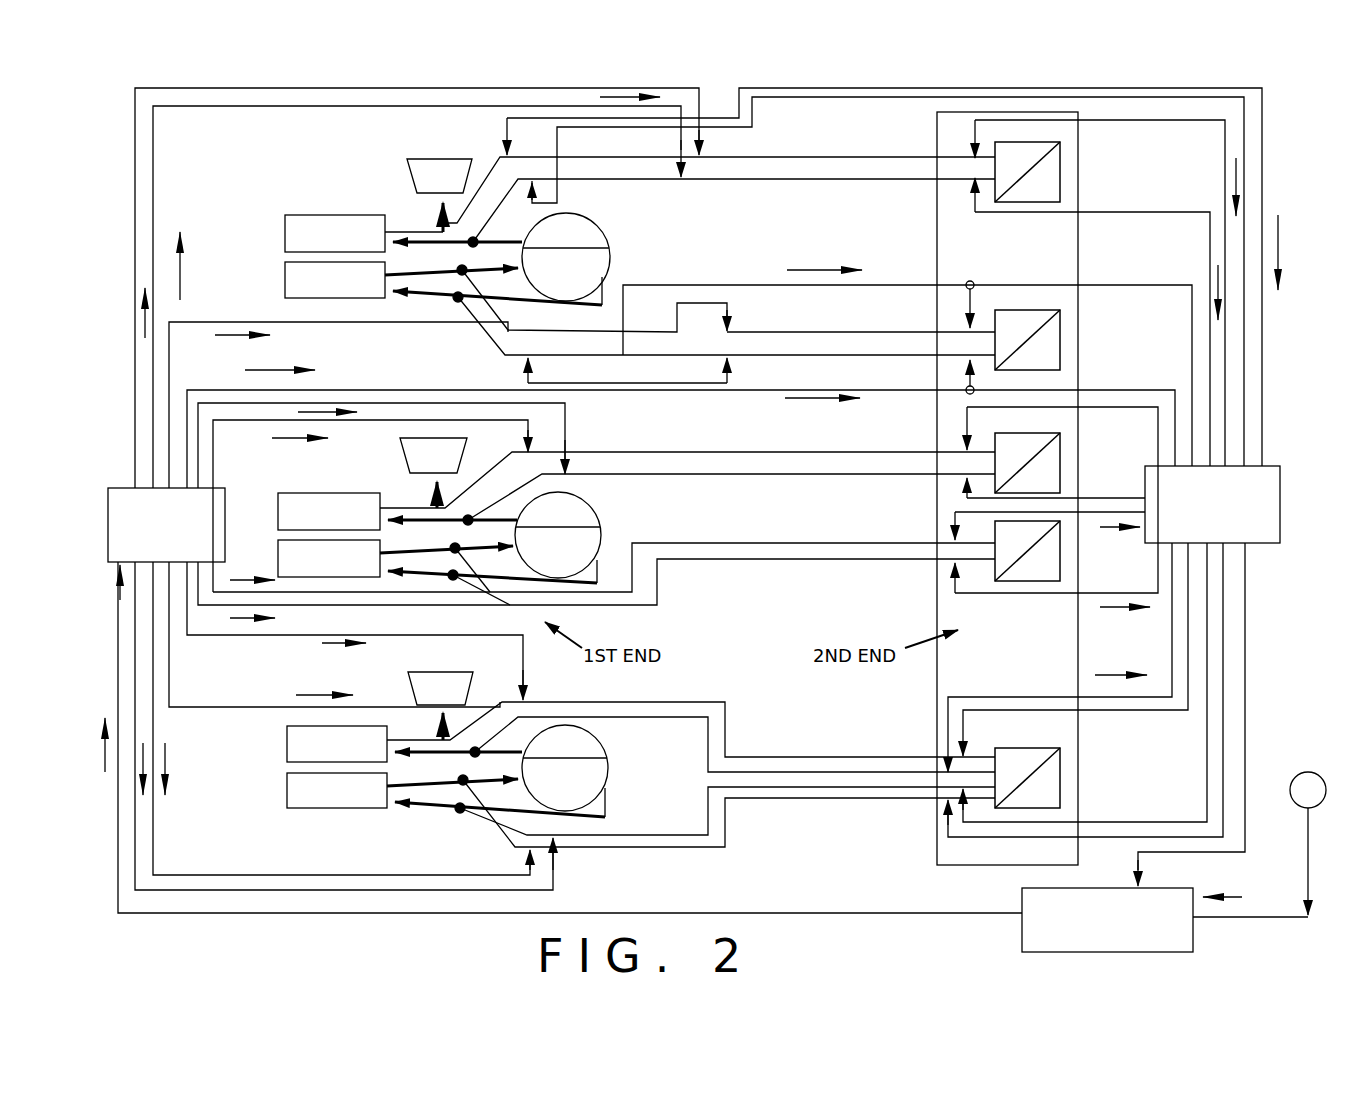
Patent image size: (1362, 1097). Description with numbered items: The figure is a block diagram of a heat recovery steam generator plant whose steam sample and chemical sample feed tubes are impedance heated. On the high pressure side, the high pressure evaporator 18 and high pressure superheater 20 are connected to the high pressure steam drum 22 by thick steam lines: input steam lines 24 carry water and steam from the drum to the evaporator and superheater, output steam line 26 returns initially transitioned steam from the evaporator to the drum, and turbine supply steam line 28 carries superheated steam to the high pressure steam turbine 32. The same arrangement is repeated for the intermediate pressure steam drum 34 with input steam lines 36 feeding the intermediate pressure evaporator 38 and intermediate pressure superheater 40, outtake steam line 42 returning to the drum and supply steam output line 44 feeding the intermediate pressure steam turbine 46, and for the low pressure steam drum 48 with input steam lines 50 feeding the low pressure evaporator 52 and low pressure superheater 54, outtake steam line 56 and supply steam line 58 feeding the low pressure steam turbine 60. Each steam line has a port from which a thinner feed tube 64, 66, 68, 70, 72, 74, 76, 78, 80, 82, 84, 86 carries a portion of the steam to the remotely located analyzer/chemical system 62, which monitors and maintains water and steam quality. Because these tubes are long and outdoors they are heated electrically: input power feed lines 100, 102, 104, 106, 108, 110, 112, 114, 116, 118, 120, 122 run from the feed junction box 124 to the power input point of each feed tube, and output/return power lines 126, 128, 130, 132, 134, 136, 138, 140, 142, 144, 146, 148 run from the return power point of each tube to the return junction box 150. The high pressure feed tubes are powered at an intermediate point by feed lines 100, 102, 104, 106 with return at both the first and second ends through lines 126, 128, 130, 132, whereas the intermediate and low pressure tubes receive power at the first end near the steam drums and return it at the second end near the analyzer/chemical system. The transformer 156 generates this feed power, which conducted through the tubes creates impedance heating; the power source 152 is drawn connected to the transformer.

The high pressure evaporator 18 is at (285, 286).
The high pressure superheater 20 is at (285, 232).
The high pressure steam drum 22 is at (598, 232).
The high pressure input steam line 24 is at (400, 335).
The high pressure output steam line 26 is at (440, 300).
The high pressure turbine supply steam line 28 is at (405, 232).
The high pressure steam turbine 32 is at (407, 172).
The intermediate pressure steam drum 34 is at (595, 515).
The intermediate pressure input steam line 36 is at (462, 521).
The intermediate pressure evaporator 38 is at (278, 563).
The intermediate pressure superheater 40 is at (278, 516).
The intermediate pressure outtake steam line 42 is at (452, 580).
The intermediate pressure supply steam output line 44 is at (410, 508).
The intermediate pressure steam turbine 46 is at (400, 452).
The low pressure steam drum 48 is at (605, 755).
The low pressure input steam line 50 is at (458, 755).
The low pressure evaporator 52 is at (287, 780).
The low pressure superheater 54 is at (287, 732).
The low pressure outtake steam line 56 is at (447, 808).
The low pressure supply steam line 58 is at (405, 740).
The low pressure steam turbine 60 is at (430, 672).
The analyzer/chemical system 62 is at (953, 112).
The feed tube 64 is at (767, 390).
The feed tube 66 is at (805, 332).
The feed tube 68 is at (775, 179).
The feed tube 70 is at (757, 157).
The feed tube 72 is at (792, 559).
The feed tube 74 is at (768, 543).
The feed tube 76 is at (810, 474).
The feed tube 78 is at (695, 452).
The feed tube 80 is at (805, 800).
The feed tube 82 is at (882, 787).
The feed tube 84 is at (750, 757).
The feed tube 86 is at (820, 772).
The input power feed line 100 is at (347, 390).
The input power feed line 102 is at (287, 322).
The input power feed line 104 is at (297, 112).
The input power feed line 106 is at (398, 88).
The input power feed line 108 is at (315, 605).
The input power feed line 110 is at (315, 592).
The input power feed line 112 is at (565, 432).
The input power feed line 114 is at (213, 435).
The input power feed line 116 is at (240, 875).
The input power feed line 118 is at (282, 890).
The input power feed line 120 is at (250, 707).
The input power feed line 122 is at (187, 635).
The feed junction box 124 is at (108, 512).
The output/return power line 126 is at (884, 390).
The output/return power line 128 is at (885, 285).
The output/return power line 130 is at (828, 97).
The output/return power line 132 is at (822, 88).
The output/return power line 134 is at (967, 593).
The output/return power line 136 is at (1050, 552).
The output/return power line 138 is at (1056, 476).
The output/return power line 140 is at (1148, 432).
The output/return power line 142 is at (1130, 822).
The output/return power line 144 is at (1175, 837).
The output/return power line 146 is at (1152, 716).
The output/return power line 148 is at (1093, 710).
The return junction box 150 is at (1280, 508).
The power source 152 is at (1296, 776).
The transformer 156 is at (1022, 925).